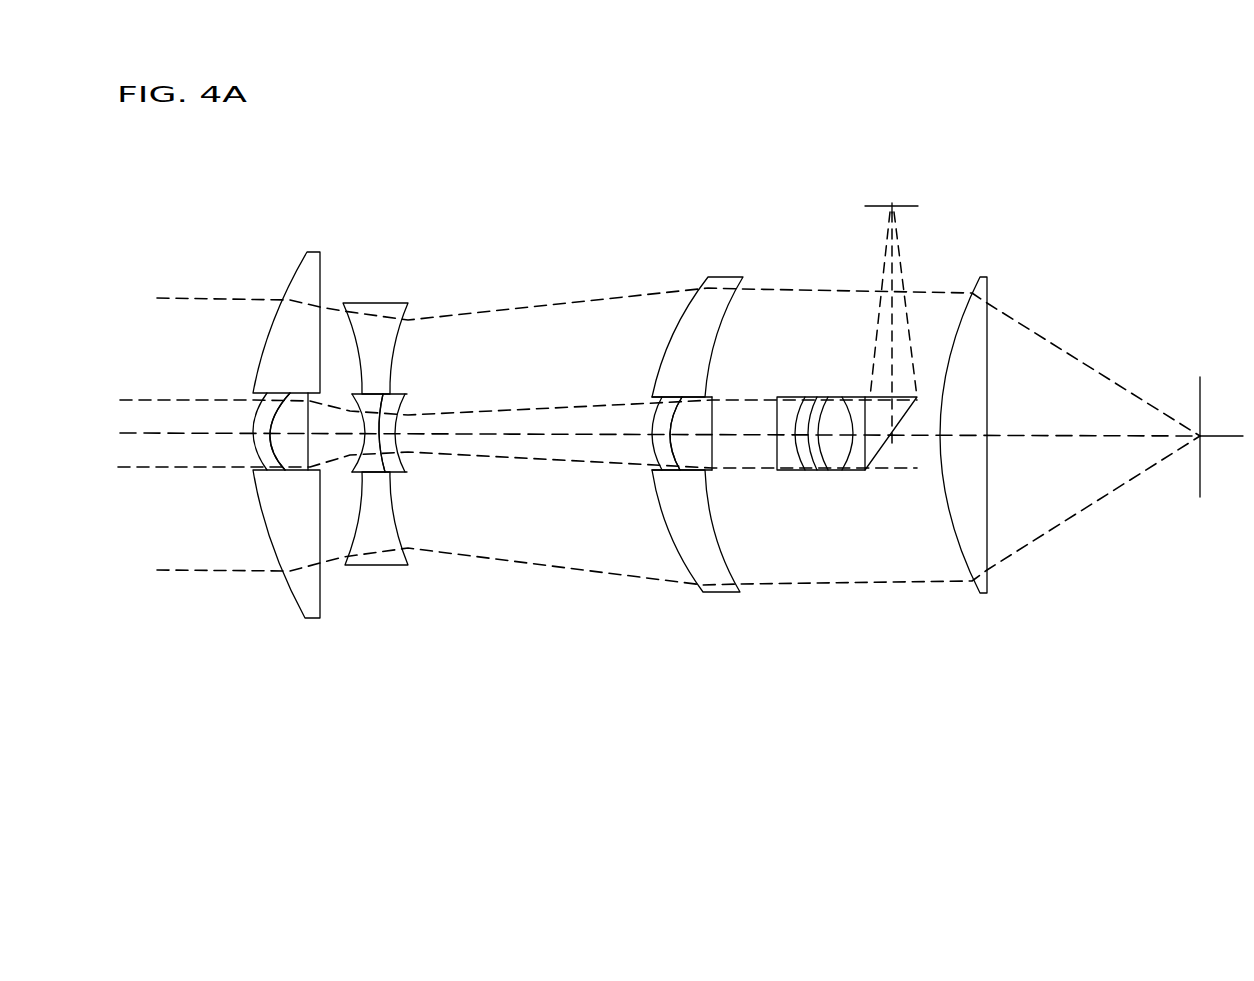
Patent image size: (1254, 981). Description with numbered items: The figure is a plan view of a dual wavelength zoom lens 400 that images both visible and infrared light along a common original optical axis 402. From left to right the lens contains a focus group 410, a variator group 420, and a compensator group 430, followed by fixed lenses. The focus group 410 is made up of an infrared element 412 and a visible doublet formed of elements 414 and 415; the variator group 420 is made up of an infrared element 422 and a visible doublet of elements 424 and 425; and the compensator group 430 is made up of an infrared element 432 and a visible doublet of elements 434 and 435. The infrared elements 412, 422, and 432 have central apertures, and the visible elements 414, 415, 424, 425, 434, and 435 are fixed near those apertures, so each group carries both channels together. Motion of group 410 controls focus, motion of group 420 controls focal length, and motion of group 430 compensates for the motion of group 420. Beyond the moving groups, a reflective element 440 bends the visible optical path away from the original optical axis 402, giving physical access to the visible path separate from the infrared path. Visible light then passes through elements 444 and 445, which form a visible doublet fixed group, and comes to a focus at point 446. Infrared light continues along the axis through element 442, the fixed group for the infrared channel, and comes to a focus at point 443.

The dual wavelength zoom lens 400 is at (488, 186).
The original optical axis 402 is at (122, 433).
The focus group 410 is at (333, 250).
The infrared element 412 is at (263, 490).
The visible doublet element 414 is at (253, 425).
The visible doublet element 415 is at (305, 415).
The variator group 420 is at (410, 297).
The infrared element 422 is at (390, 508).
The visible doublet element 424 is at (357, 472).
The visible doublet element 425 is at (396, 400).
The compensator group 430 is at (760, 275).
The infrared element 432 is at (712, 563).
The visible doublet element 434 is at (655, 425).
The visible doublet element 435 is at (702, 418).
The reflective element 440 is at (882, 458).
The fixed group for the infrared channel 442 is at (975, 515).
The infrared focus point 443 is at (1204, 433).
The visible doublet fixed group element 444 is at (783, 472).
The visible doublet fixed group element 445 is at (833, 397).
The visible focus point 446 is at (898, 206).